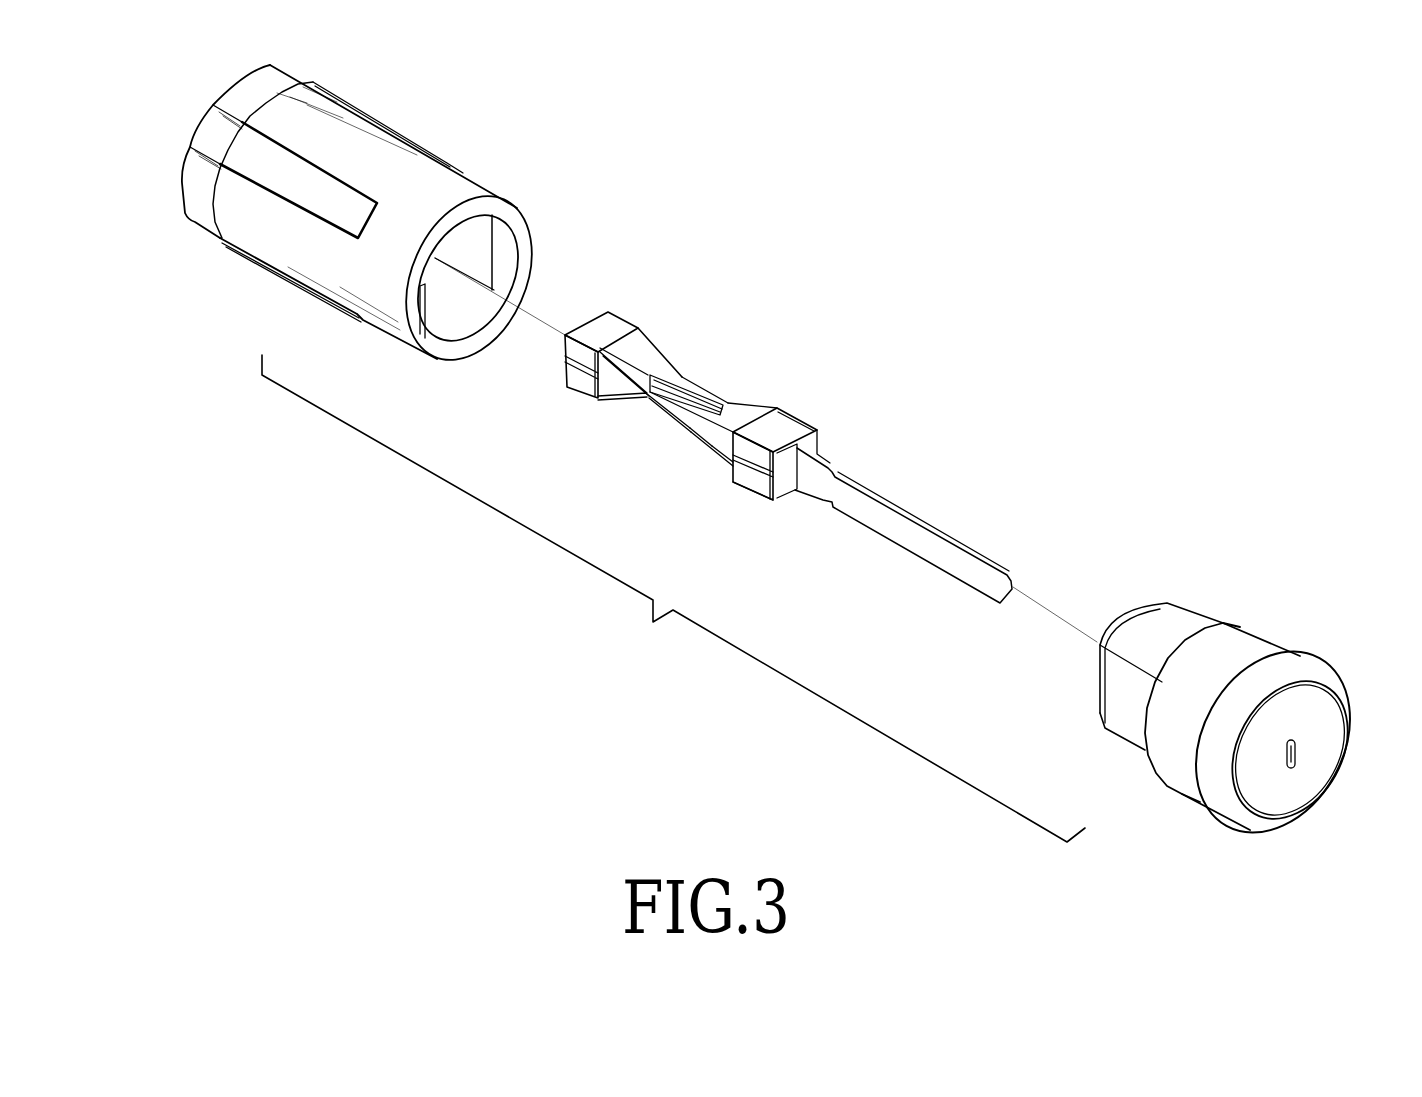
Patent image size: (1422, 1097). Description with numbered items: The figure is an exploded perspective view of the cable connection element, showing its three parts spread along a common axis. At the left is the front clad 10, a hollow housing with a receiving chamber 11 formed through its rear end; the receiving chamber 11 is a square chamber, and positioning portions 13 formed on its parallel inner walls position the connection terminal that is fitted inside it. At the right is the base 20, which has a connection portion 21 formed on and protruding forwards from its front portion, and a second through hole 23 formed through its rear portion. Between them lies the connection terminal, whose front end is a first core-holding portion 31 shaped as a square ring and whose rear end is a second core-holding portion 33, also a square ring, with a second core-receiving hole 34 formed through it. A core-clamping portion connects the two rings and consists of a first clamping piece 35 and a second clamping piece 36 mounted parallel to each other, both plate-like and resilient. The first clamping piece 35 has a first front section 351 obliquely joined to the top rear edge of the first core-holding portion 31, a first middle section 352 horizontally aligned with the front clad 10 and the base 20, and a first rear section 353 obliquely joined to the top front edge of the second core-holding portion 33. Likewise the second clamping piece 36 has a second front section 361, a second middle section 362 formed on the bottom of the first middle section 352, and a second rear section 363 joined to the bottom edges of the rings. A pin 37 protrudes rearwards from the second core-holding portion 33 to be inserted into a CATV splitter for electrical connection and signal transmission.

The front clad 10 is at (257, 247).
The receiving chamber 11 is at (500, 273).
The positioning portion 13 is at (483, 245).
The base 20 is at (1268, 642).
The connection portion 21 is at (1180, 620).
The second through hole 23 is at (1295, 753).
The first core-holding portion 31 is at (573, 382).
The second core-holding portion 33 is at (760, 490).
The second core-receiving hole 34 is at (790, 503).
The first clamping piece 35 is at (747, 413).
The first front section 351 is at (637, 342).
The first middle section 352 is at (688, 385).
The first rear section 353 is at (760, 404).
The second clamping piece 36 is at (673, 428).
The second front section 361 is at (613, 400).
The second middle section 362 is at (653, 407).
The second rear section 363 is at (722, 448).
The pin 37 is at (942, 552).